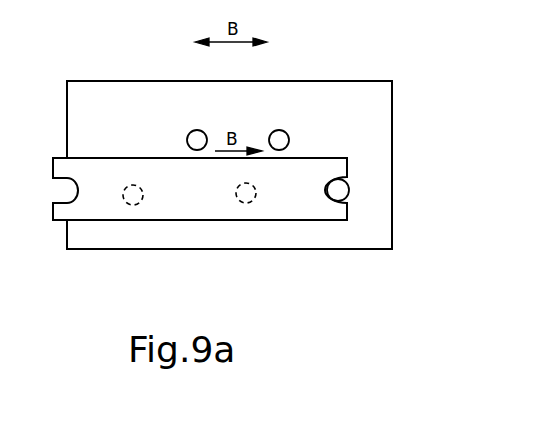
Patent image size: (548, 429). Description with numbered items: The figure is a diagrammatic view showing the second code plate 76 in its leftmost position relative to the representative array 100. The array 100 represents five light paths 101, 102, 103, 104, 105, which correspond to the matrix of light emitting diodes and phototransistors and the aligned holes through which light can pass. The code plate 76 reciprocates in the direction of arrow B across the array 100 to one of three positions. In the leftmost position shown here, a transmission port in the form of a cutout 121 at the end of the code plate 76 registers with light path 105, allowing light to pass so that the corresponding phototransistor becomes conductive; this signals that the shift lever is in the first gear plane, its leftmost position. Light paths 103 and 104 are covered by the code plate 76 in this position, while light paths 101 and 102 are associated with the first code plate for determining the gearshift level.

The array 100 is at (173, 250).
The code plate 76 is at (213, 220).
The light path 101 is at (190, 132).
The light path 102 is at (281, 140).
The light transmission path 103 is at (147, 178).
The light transmission path 104 is at (255, 228).
The light path 105 is at (334, 158).
The cutout 121 is at (338, 201).